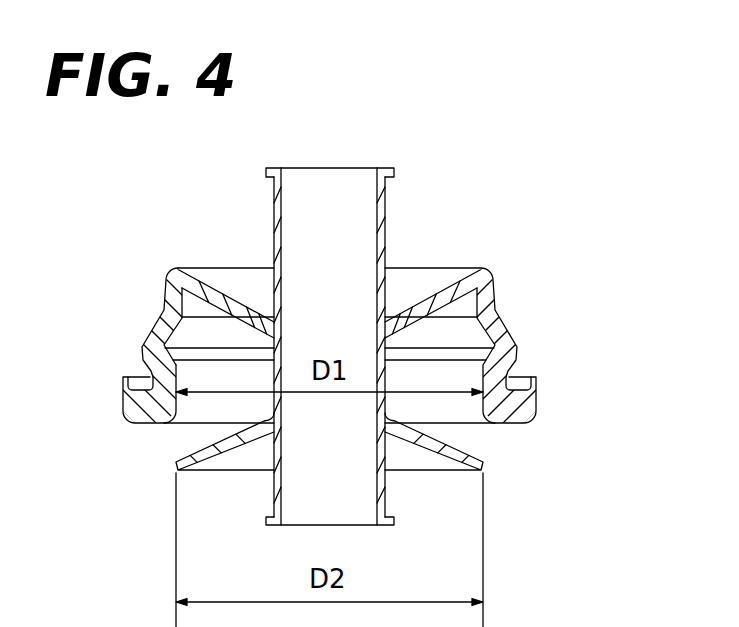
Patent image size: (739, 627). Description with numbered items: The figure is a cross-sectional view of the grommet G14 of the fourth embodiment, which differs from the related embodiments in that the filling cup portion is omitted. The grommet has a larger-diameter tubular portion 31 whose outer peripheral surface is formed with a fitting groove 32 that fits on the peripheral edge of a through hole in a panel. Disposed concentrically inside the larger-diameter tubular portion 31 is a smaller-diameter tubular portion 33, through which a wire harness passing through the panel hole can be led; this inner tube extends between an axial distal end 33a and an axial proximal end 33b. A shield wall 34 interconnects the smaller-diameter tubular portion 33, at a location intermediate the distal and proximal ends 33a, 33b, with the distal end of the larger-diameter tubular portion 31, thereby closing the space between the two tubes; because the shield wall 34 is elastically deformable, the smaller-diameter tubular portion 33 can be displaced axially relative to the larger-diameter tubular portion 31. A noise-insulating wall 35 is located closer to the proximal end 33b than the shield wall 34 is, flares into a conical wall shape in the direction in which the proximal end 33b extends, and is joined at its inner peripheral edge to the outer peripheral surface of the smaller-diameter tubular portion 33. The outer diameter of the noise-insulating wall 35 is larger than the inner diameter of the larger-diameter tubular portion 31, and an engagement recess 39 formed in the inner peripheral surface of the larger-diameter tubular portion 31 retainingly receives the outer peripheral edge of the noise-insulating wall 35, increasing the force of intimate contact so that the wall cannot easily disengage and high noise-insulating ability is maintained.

The grommet G14 is at (360, 342).
The larger-diameter tubular portion 31 is at (162, 413).
The fitting groove 32 is at (150, 372).
The smaller-diameter tubular portion 33 is at (387, 224).
The distal end of smaller-diameter tubular portion 33a is at (394, 170).
The proximal end of smaller-diameter tubular portion 33b is at (383, 526).
The shield wall 34 is at (219, 292).
The noise-insulating wall 35 is at (240, 448).
The engagement recess 39 is at (175, 329).